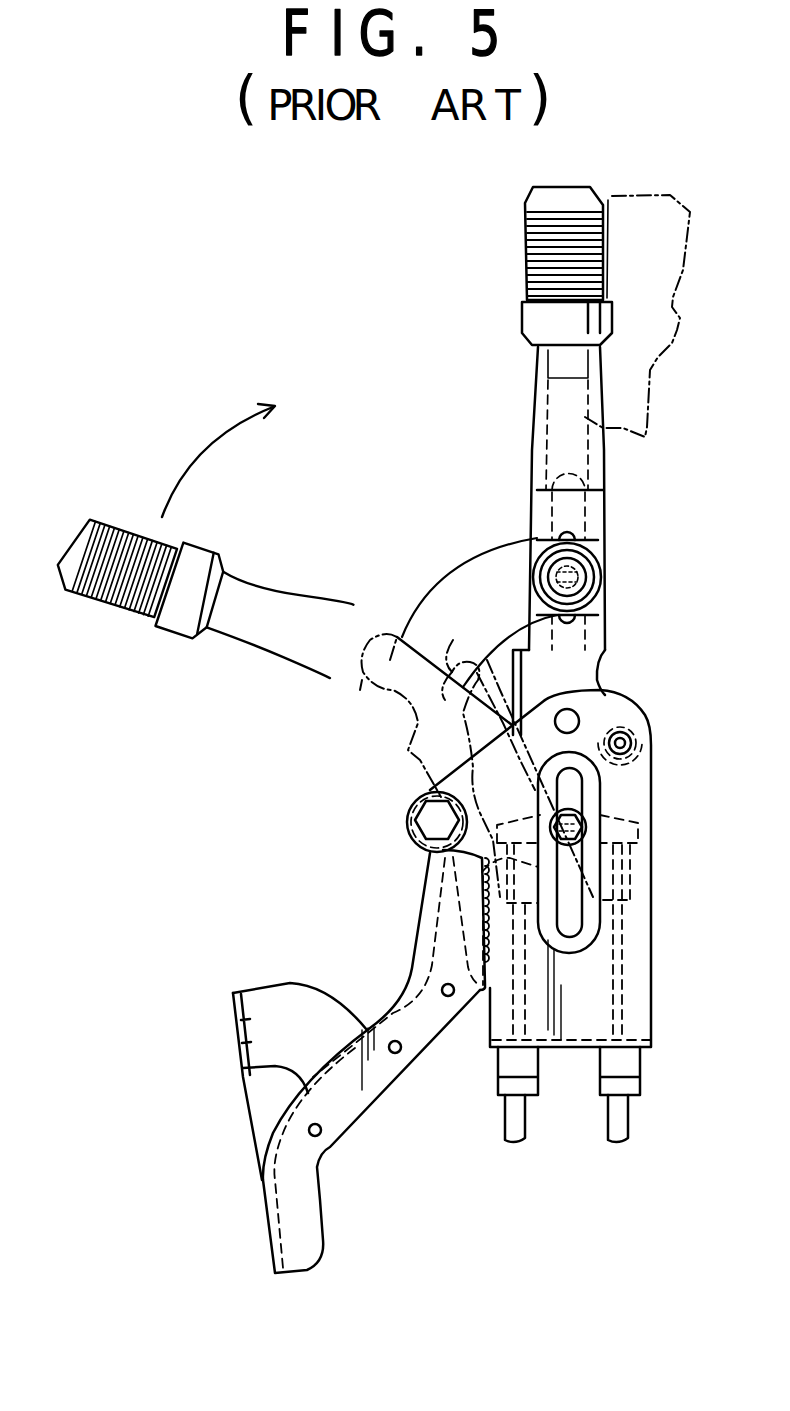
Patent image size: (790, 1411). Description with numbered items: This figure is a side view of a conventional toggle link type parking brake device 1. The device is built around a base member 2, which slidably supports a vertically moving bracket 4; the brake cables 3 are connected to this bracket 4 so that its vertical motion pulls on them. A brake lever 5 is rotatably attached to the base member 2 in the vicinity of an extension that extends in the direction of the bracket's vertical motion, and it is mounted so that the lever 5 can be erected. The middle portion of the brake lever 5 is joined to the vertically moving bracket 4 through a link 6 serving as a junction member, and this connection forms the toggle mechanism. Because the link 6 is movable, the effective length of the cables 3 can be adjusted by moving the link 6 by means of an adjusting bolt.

The parking brake device 1 is at (350, 346).
The base member 2 is at (651, 938).
The cables 3 is at (512, 1120).
The vertically moving bracket 4 is at (643, 877).
The brake lever 5 is at (606, 505).
The link 6 is at (453, 640).